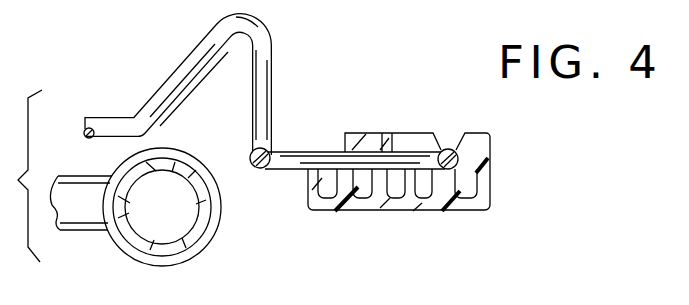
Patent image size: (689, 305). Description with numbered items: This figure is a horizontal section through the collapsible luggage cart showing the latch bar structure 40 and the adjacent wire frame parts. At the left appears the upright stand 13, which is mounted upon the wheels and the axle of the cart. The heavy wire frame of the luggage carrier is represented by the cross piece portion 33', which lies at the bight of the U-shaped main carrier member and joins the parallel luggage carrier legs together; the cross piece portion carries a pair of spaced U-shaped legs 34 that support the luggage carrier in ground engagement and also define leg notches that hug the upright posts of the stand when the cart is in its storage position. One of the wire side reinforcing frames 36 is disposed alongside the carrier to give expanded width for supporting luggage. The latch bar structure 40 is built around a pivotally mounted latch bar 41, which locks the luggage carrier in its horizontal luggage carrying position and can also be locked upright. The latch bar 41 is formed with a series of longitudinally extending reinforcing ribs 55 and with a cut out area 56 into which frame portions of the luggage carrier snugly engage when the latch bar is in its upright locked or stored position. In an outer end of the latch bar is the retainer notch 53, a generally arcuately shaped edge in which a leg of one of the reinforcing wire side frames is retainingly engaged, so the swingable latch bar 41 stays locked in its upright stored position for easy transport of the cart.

The upright stand 13 is at (198, 256).
The cross piece portion 33' is at (100, 110).
The U-shaped legs 34 is at (261, 58).
The wire side reinforcing frame 36 is at (321, 151).
The latch bar structure 40 is at (489, 188).
The latch bar 41 is at (378, 208).
The latch bar retainer notch 53 is at (490, 158).
The reinforcing ribs 55 is at (452, 211).
The cut out area 56 is at (402, 170).